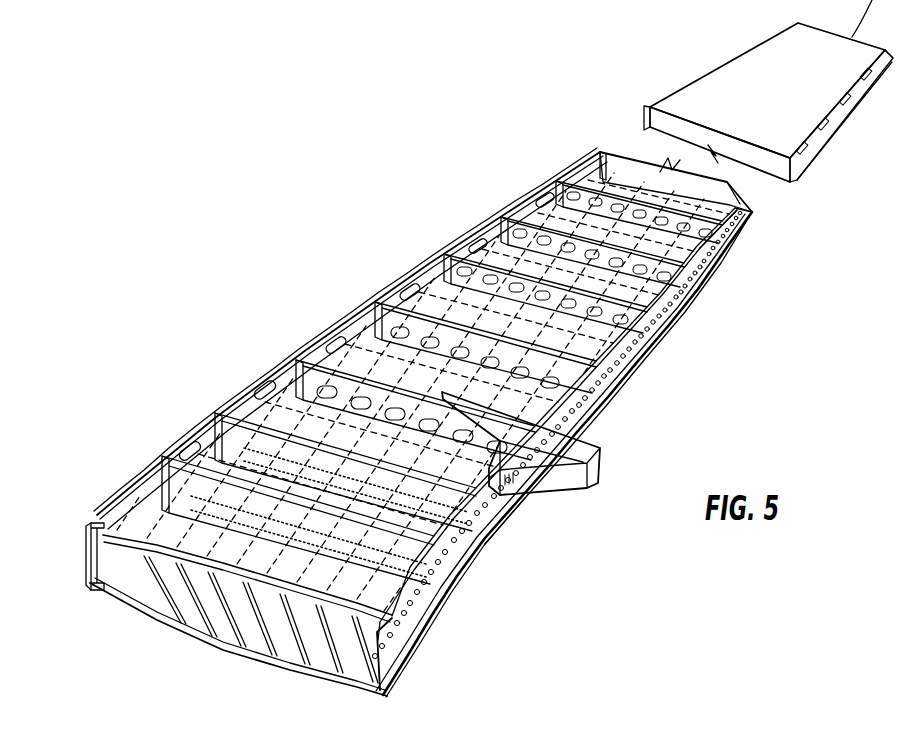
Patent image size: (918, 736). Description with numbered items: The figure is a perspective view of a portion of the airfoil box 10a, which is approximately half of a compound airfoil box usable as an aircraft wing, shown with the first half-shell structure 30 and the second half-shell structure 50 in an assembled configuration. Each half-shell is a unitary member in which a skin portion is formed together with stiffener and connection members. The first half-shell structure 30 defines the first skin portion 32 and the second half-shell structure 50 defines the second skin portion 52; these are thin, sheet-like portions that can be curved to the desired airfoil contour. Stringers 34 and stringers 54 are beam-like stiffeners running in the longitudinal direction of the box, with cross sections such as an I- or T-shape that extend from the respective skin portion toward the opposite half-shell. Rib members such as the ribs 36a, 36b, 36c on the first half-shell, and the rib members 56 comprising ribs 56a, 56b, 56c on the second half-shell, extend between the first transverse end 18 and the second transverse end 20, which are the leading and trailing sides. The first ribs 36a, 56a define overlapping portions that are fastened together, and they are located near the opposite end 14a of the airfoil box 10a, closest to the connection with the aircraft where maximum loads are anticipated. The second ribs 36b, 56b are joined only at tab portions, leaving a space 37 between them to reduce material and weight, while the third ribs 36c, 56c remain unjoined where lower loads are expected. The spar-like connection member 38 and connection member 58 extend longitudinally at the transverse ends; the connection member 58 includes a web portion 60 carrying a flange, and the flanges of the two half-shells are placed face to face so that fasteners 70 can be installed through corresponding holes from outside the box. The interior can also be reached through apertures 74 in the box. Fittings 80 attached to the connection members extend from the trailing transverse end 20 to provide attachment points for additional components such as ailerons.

The airfoil box 10a is at (200, 317).
The opposite end of the airfoil box 14a is at (173, 630).
The first transverse end 18 is at (348, 260).
The second transverse end 20 is at (665, 392).
The first half-shell structure 30 is at (420, 250).
The first skin portion 32 is at (137, 485).
The stringers 34 is at (133, 600).
The first plurality of ribs 36a is at (318, 443).
The second plurality of ribs 36b is at (687, 283).
The third plurality of ribs 36c is at (613, 153).
The space 37 is at (358, 397).
The connection member 38 is at (433, 0).
The second half-shell structure 50 is at (483, 562).
The second skin portion 52 is at (470, 0).
The stringers 54 is at (220, 637).
The rib members 56 is at (507, 0).
The first plurality of ribs 56a is at (400, 590).
The second plurality of ribs 56b is at (632, 360).
The third plurality of ribs 56c is at (730, 228).
The connection member 58 is at (523, 0).
The web portion 60 is at (560, 0).
The fasteners 70 is at (823, 141).
The apertures 74 is at (190, 453).
The fittings 80 is at (612, 454).